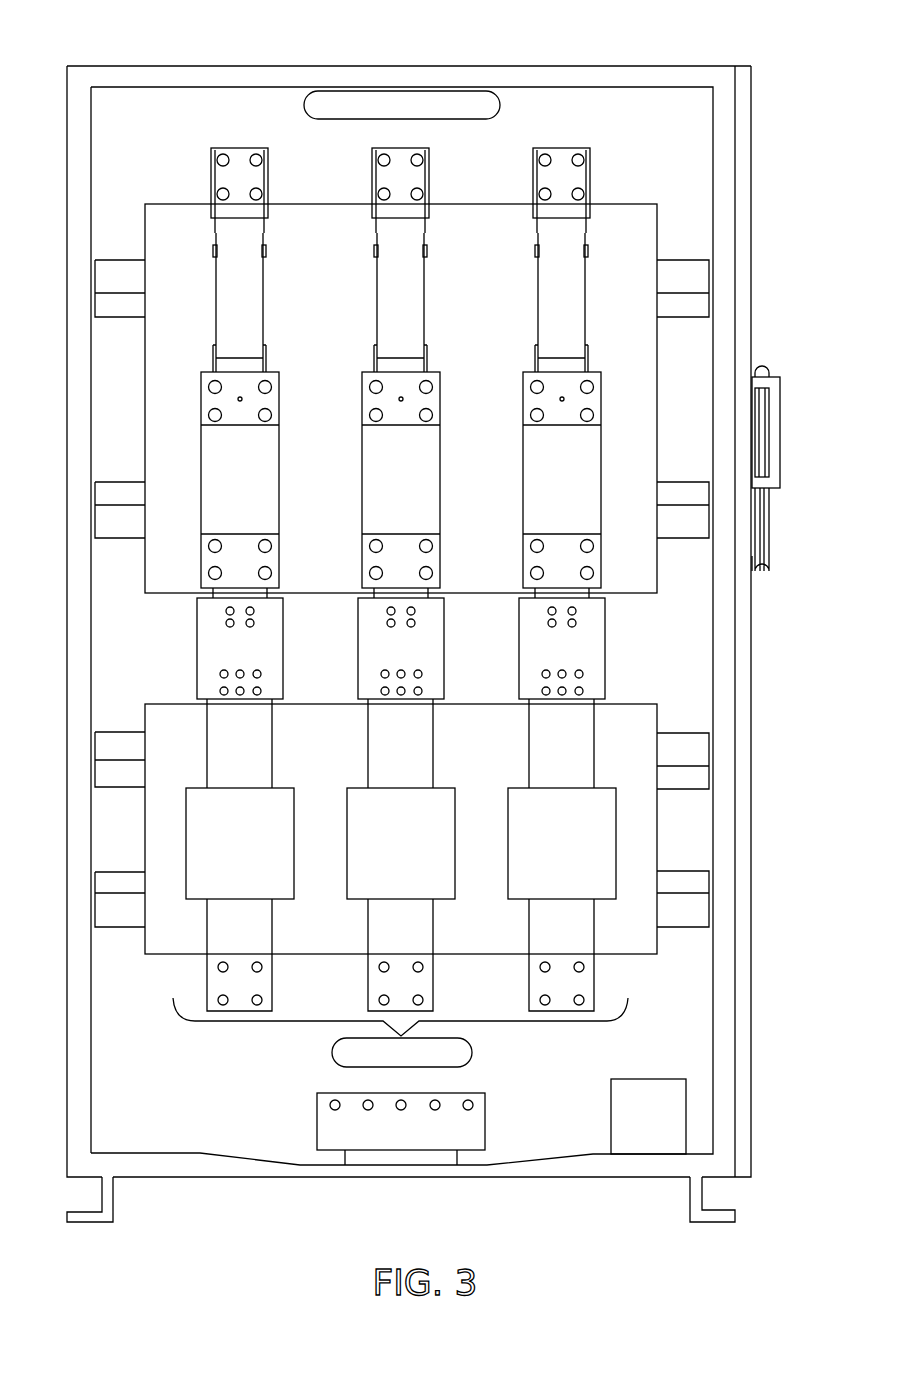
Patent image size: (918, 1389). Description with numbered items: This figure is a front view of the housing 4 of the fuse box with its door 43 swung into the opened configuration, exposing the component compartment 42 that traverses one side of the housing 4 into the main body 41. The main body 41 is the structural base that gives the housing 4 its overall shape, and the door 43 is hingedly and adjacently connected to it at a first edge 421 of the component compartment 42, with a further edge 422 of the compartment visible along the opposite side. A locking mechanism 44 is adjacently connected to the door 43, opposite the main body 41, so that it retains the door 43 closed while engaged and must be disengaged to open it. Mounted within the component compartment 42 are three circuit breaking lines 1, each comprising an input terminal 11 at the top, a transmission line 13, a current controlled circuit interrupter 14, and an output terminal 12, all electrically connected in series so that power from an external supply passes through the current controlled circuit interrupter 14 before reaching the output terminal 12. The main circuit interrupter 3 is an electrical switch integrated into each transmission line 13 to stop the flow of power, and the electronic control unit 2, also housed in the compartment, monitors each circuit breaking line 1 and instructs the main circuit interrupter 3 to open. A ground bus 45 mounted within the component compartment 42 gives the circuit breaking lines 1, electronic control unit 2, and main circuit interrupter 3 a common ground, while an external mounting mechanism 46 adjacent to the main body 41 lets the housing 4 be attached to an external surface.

The circuit breaking line 1 is at (400, 1034).
The electronic control unit 2 is at (647, 1092).
The main circuit interrupter 3 is at (216, 776).
The housing 4 is at (784, 564).
The input terminal 11 is at (240, 166).
The output terminal 12 is at (283, 833).
The transmission line 13 is at (256, 308).
The current controlled circuit interrupter 14 is at (270, 487).
The main body 41 is at (530, 76).
The component compartment 42 is at (630, 175).
The door 43 is at (752, 287).
The locking mechanism 44 is at (775, 386).
The ground bus 45 is at (475, 1132).
The external mounting mechanism 46 is at (697, 1200).
The first edge 421 is at (733, 73).
The inner side wall 422 is at (93, 178).